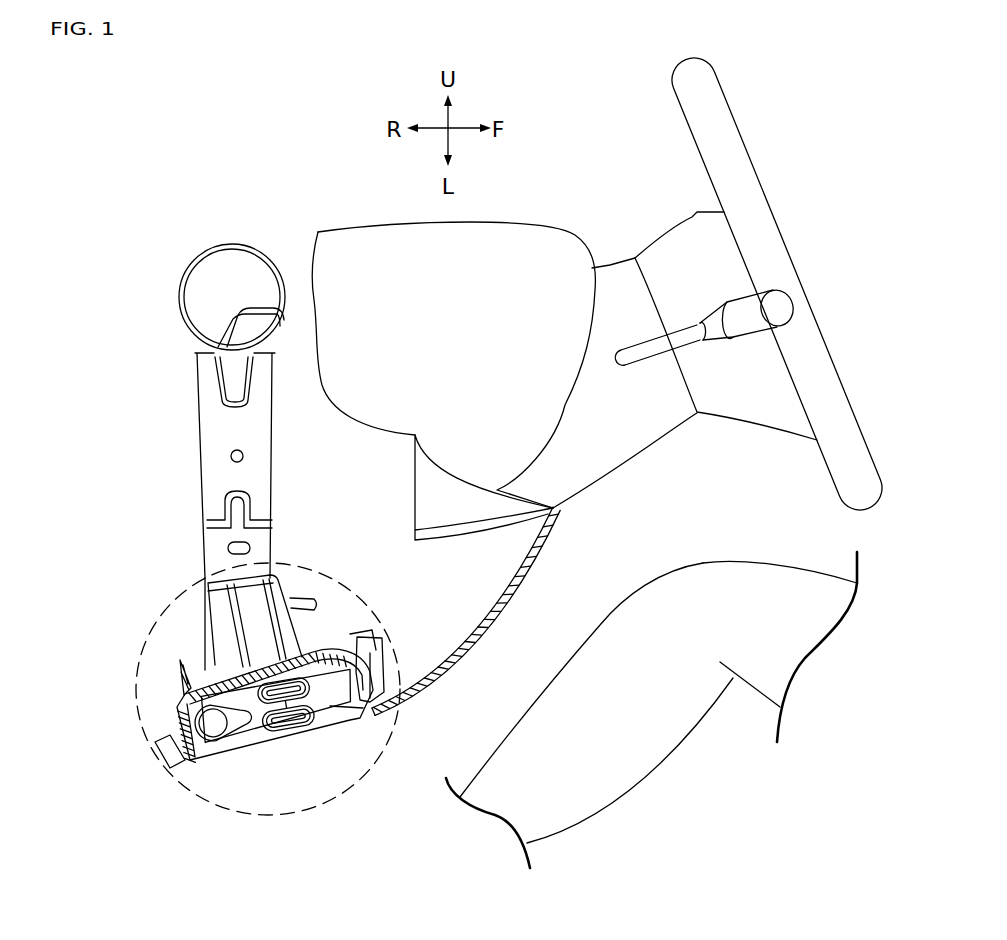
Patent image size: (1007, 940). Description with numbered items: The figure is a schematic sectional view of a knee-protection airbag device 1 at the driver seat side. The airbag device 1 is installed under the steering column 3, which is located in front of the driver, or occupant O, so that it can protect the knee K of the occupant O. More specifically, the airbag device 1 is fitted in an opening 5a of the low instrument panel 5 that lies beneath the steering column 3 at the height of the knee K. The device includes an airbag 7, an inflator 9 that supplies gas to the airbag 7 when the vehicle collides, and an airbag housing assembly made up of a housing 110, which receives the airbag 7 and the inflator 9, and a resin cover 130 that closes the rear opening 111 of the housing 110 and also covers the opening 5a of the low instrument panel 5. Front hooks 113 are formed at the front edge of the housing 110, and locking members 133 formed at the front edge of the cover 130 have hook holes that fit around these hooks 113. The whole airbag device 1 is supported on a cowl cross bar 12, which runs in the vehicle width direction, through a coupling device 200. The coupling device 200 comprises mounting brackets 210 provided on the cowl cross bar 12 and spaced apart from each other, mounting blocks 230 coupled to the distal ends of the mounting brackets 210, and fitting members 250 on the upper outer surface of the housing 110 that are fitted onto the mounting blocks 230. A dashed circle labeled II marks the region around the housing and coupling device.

The airbag device 1 is at (246, 705).
The steering column 3 is at (613, 273).
The low instrument panel 5 is at (541, 538).
The opening 5a is at (374, 712).
The airbag 7 is at (288, 722).
The inflator 9 is at (217, 746).
The cowl cross bar 12 is at (232, 246).
The housing 110 is at (222, 765).
The rear opening 111 is at (343, 700).
The front hooks 113 is at (387, 668).
The cover 130 is at (182, 755).
The locking members 133 is at (363, 633).
The coupling device 200 is at (204, 430).
The mounting brackets 210 is at (201, 443).
The mounting blocks 230 is at (208, 604).
The fitting members 250 is at (208, 631).
The section line II is at (185, 797).
The knee K is at (610, 768).
The occupant O is at (785, 645).